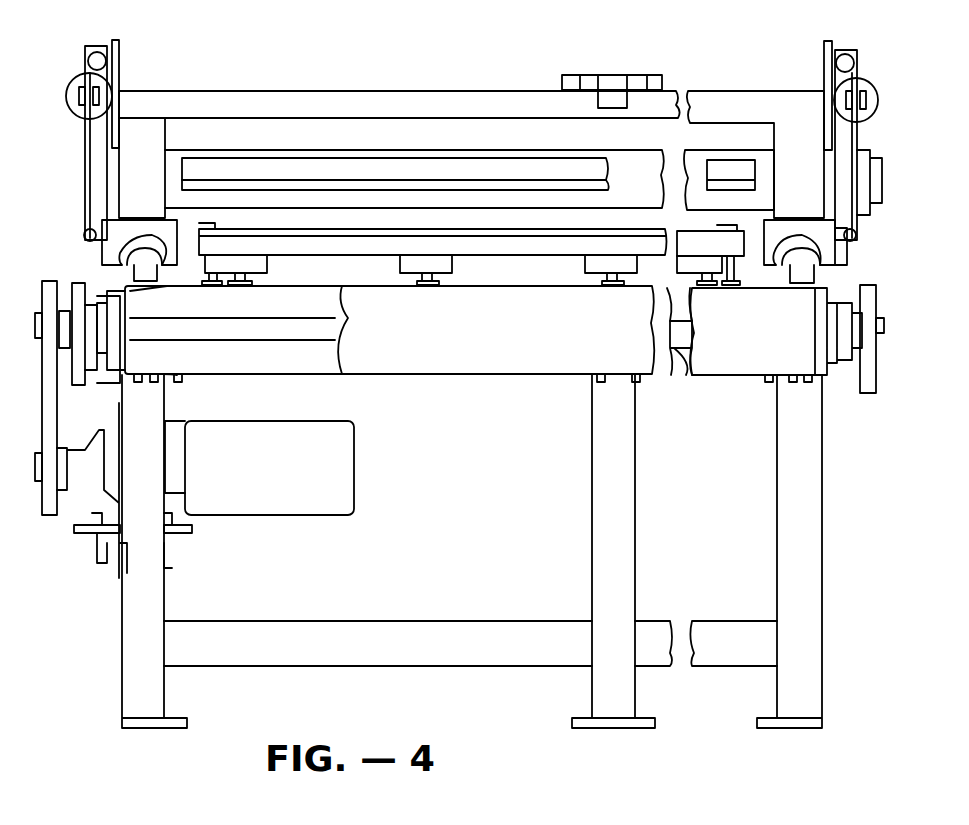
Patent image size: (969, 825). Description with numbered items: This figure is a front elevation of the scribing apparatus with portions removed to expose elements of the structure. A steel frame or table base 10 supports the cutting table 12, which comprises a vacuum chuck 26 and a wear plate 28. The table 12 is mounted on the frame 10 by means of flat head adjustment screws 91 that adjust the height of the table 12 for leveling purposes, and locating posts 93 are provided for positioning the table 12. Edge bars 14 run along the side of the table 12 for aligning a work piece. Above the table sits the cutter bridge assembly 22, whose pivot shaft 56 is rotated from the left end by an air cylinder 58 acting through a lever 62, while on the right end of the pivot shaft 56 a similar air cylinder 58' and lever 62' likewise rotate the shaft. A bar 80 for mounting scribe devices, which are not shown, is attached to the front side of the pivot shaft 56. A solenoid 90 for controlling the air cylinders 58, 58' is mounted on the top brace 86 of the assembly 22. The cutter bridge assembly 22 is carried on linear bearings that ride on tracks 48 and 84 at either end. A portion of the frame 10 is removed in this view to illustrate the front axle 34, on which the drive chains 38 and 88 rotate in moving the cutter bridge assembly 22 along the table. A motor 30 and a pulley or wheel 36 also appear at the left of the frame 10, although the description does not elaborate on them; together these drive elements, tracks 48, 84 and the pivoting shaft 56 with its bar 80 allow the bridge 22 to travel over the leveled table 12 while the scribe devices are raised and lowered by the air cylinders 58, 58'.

The table base 10 is at (586, 542).
The cutting table 12 is at (347, 216).
The edge bars 14 is at (205, 224).
The cutter bridge assembly 22 is at (307, 84).
The chuck 26 is at (528, 216).
The wear plate 28 is at (385, 234).
The motor 30 is at (345, 452).
The front axle 34 is at (678, 372).
The drive pulley 36 is at (40, 394).
The drive chain 38 is at (72, 384).
The track 48 is at (135, 262).
The pivot shaft 56 is at (634, 170).
The air cylinder 58 is at (77, 84).
The air cylinder 58' is at (864, 78).
The lever 62 is at (75, 140).
The lever 62' is at (867, 141).
The bar 80 is at (545, 170).
The track 84 is at (800, 258).
The top brace 86 is at (450, 102).
The drive chain 88 is at (858, 392).
The solenoid 90 is at (612, 80).
The flat head adjustment screws 91 is at (415, 278).
The locating posts 93 is at (205, 275).